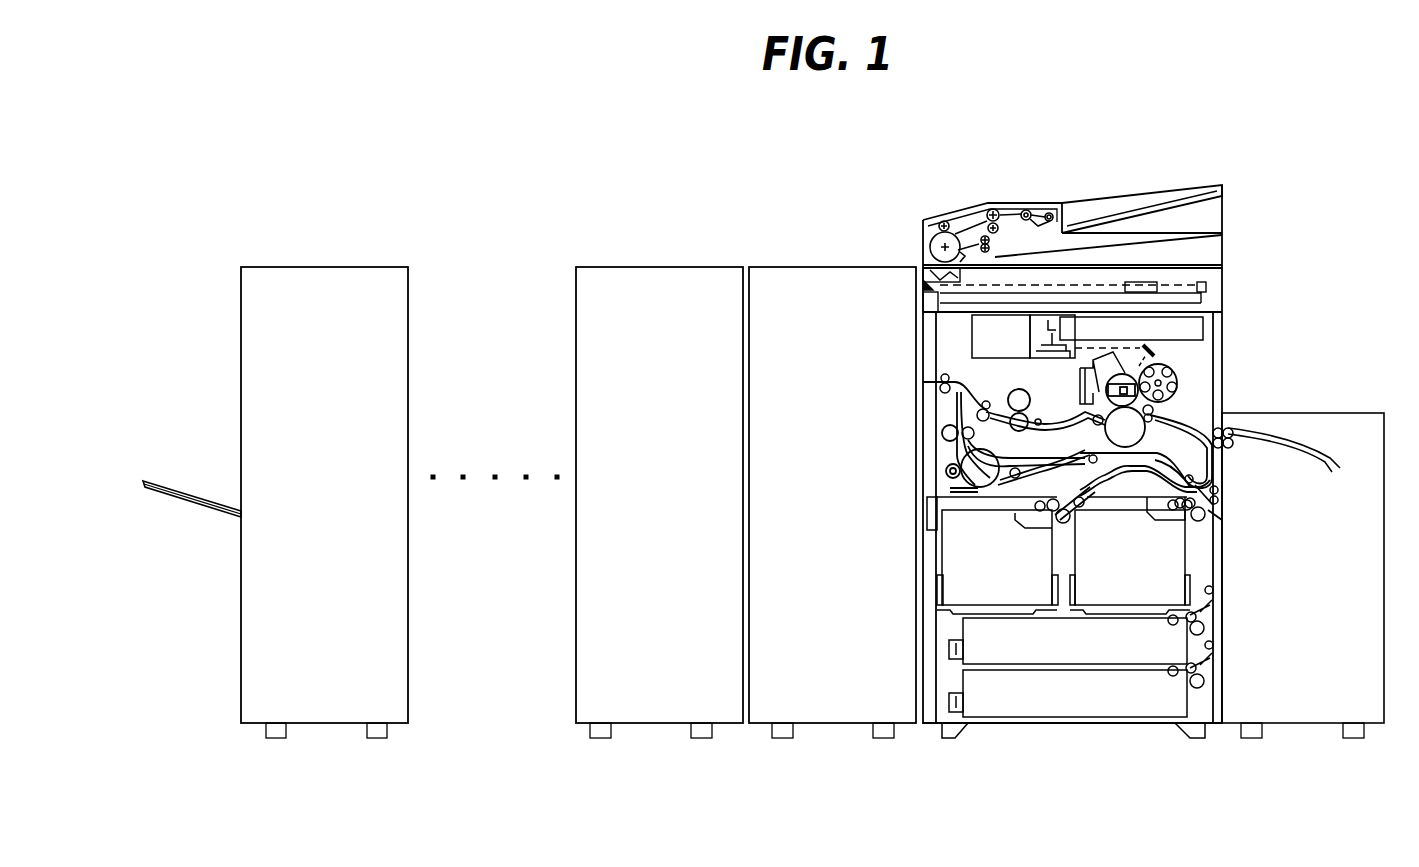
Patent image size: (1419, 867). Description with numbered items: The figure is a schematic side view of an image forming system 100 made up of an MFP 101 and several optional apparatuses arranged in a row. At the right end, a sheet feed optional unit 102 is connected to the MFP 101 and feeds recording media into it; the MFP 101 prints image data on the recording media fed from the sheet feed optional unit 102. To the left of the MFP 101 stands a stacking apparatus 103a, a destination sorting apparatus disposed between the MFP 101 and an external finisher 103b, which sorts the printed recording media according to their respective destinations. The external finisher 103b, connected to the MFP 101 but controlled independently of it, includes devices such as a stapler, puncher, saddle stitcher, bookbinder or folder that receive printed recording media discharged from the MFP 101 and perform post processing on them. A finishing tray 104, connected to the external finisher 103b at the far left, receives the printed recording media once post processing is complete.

The image forming system 100 is at (474, 106).
The MFP 101 is at (1122, 720).
The sheet feed optional unit 102 is at (1300, 713).
The stacking apparatus 103a is at (829, 266).
The external finisher 103b is at (680, 263).
The finishing tray 104 is at (172, 497).